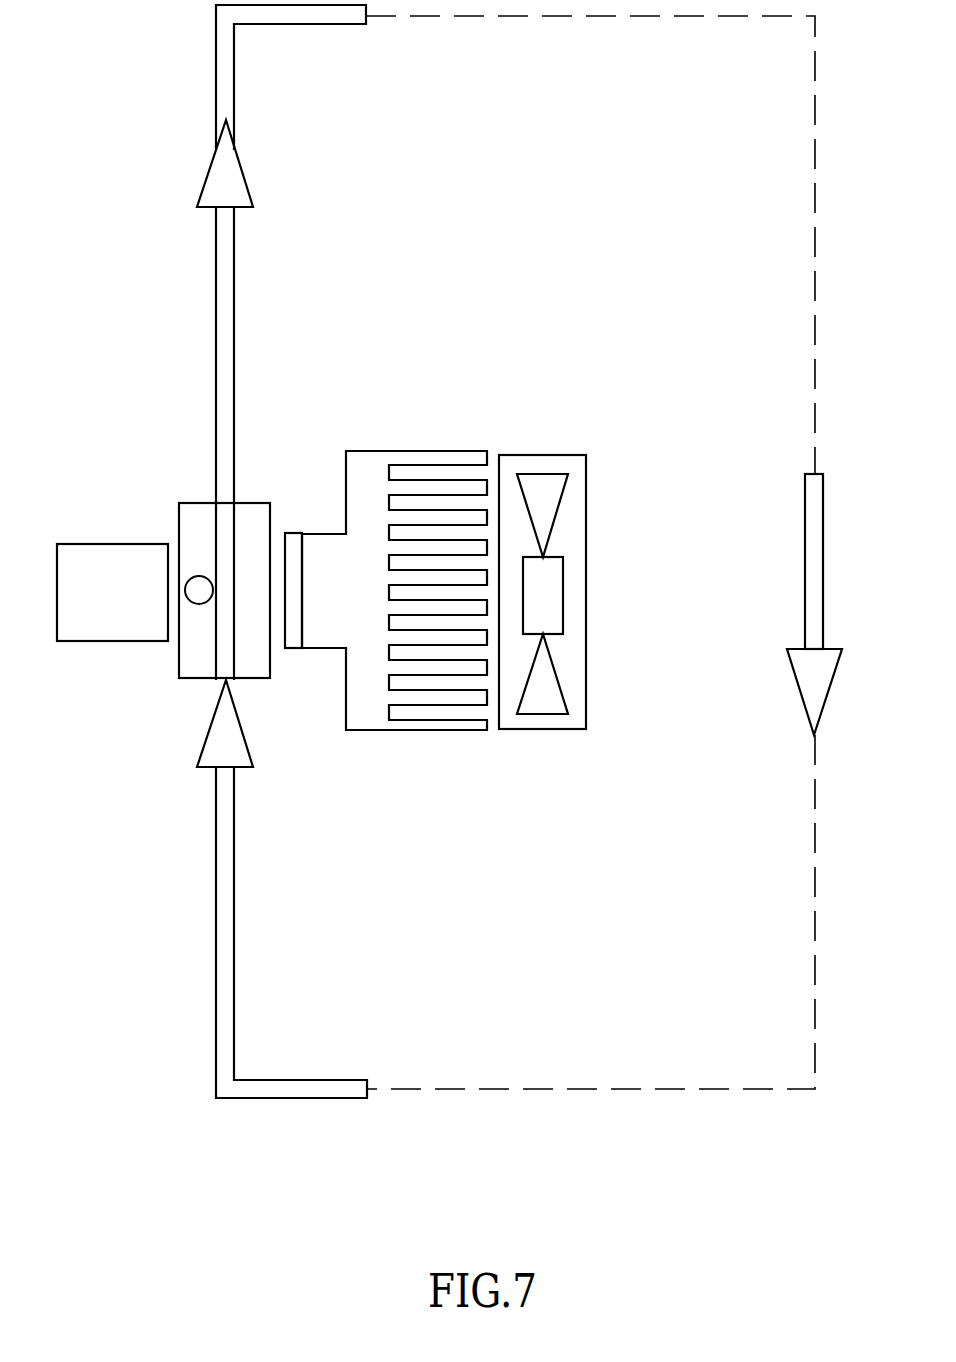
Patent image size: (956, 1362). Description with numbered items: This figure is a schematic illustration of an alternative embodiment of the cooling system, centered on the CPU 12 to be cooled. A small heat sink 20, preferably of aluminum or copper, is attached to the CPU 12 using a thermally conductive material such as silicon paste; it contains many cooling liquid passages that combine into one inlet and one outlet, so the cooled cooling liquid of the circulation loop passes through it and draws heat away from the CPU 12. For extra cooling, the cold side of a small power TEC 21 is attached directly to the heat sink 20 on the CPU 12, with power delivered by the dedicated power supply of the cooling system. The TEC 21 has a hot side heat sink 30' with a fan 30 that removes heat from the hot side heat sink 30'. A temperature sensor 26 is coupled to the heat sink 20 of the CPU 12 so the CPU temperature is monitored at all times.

The CPU 12 is at (128, 544).
The heat sink 20 is at (196, 503).
The TEC 21 is at (294, 533).
The temperature sensor 26 is at (207, 605).
The fan 30 is at (571, 557).
The hot side heat sink 30' is at (404, 557).